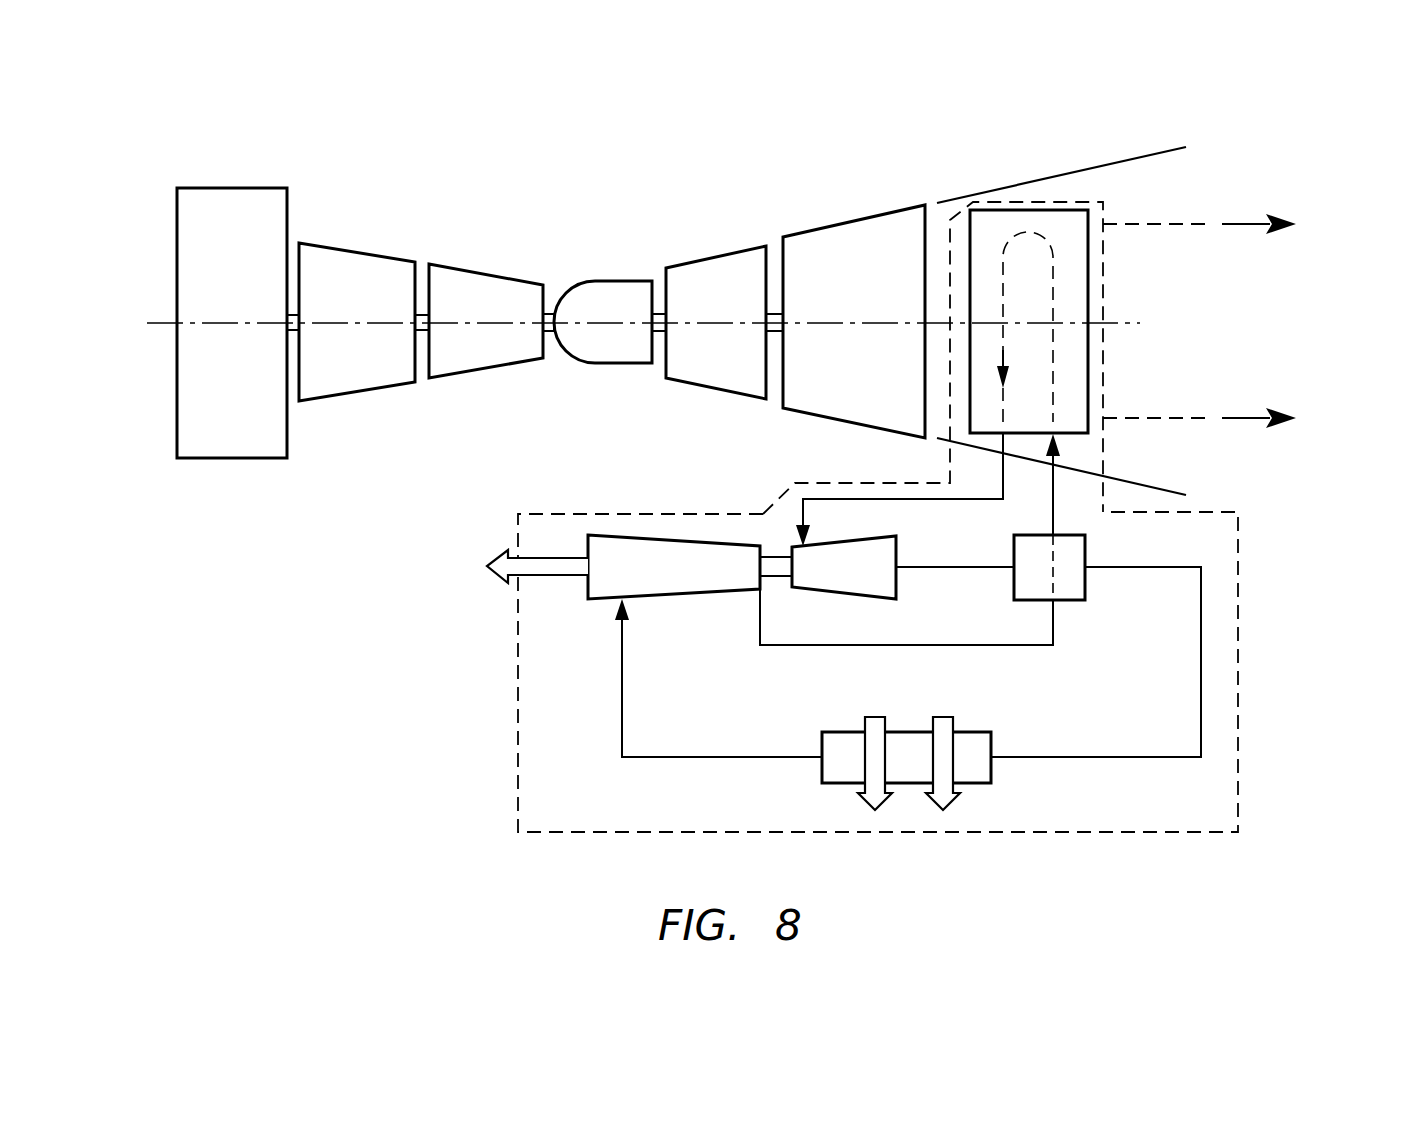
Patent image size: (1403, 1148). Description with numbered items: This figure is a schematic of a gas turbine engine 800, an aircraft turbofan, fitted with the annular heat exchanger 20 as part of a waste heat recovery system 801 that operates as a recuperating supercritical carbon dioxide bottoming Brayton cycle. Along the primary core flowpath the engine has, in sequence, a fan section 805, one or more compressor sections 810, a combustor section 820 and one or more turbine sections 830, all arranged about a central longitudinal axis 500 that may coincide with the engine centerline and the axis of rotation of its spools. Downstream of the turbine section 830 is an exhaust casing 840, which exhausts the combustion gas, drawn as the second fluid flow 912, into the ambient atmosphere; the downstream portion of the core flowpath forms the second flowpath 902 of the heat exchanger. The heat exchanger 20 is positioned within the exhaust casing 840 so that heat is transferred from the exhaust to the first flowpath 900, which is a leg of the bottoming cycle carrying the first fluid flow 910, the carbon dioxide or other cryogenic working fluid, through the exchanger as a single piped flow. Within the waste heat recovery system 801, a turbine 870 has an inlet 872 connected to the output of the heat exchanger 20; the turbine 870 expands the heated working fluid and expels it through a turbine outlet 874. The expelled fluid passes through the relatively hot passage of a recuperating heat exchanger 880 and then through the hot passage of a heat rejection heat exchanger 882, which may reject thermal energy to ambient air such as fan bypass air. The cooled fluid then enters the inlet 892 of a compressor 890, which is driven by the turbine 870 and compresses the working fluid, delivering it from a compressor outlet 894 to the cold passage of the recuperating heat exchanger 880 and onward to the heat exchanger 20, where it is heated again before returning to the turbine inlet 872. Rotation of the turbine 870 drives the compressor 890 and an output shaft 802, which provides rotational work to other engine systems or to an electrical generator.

The gas turbine engine 800 is at (725, 146).
The fan section 805 is at (223, 160).
The compressor section 810 is at (420, 325).
The central longitudinal axis 500 is at (357, 326).
The combustor section 820 is at (585, 281).
The turbine section 830 is at (877, 206).
The exhaust casing 840 is at (1091, 165).
The heat exchanger 20 is at (1088, 345).
The first flowpath 900 is at (1053, 295).
The first fluid flow 910 is at (1003, 352).
The second flowpath 902 is at (1157, 224).
The second fluid flow 912 is at (1243, 224).
The waste heat recovery system 801 is at (1238, 658).
The output shaft 802 is at (543, 557).
The compressor 890 is at (657, 537).
The turbine 870 is at (865, 600).
The turbine inlet 872 is at (790, 547).
The turbine outlet 874 is at (897, 568).
The recuperating heat exchanger 880 is at (1073, 600).
The heat rejection heat exchanger 882 is at (993, 743).
The compressor inlet 892 is at (611, 602).
The compressor outlet 894 is at (755, 590).